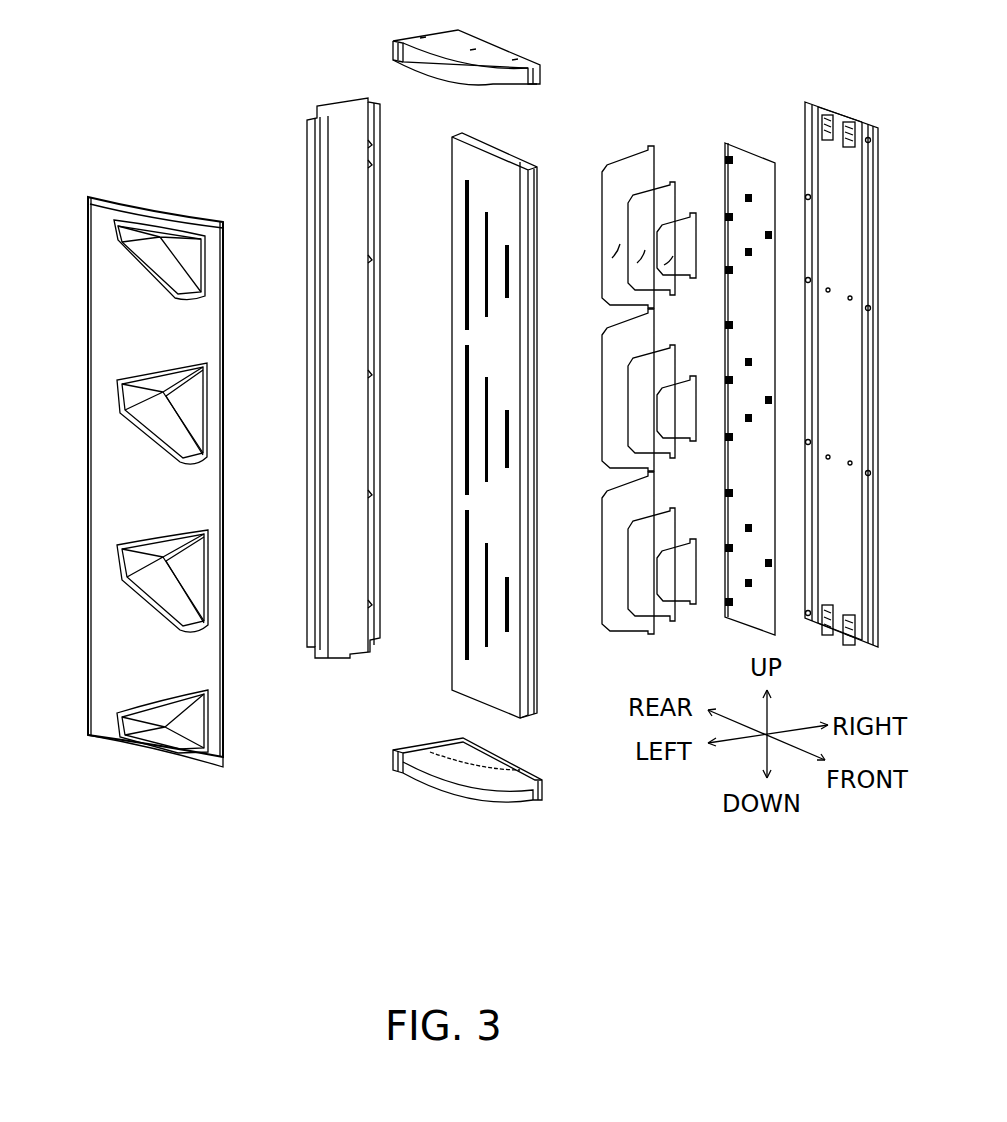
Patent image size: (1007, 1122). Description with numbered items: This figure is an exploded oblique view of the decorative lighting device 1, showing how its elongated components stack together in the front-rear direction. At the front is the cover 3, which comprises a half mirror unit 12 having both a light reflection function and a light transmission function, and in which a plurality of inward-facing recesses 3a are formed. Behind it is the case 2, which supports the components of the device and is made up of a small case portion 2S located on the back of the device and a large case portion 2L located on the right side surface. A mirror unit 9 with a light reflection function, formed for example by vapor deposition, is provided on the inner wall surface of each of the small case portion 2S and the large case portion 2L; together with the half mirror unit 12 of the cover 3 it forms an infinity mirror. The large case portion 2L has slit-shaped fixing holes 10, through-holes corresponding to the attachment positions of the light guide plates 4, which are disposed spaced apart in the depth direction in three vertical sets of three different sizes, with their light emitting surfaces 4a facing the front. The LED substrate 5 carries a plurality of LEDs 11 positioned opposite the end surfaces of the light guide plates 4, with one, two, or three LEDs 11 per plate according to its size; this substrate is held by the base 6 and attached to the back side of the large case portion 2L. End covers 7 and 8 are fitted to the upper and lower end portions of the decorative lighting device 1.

The decorative lighting device 1 is at (233, 104).
The case 2 is at (272, 675).
The small case portion 2S is at (350, 658).
The large case portion 2L is at (462, 698).
The cover 3 is at (88, 582).
The inward-facing recesses 3a is at (210, 455).
The light guide plates 4 is at (620, 172).
The light emitting surfaces 4a is at (664, 265).
The LED substrate 5 is at (745, 153).
The base 6 is at (840, 115).
The end cover 7 is at (510, 56).
The end cover 8 is at (535, 800).
The mirror unit 9 is at (356, 196).
The fixing holes 10 is at (506, 272).
The LEDs 11 is at (746, 256).
The half mirror unit 12 is at (98, 617).